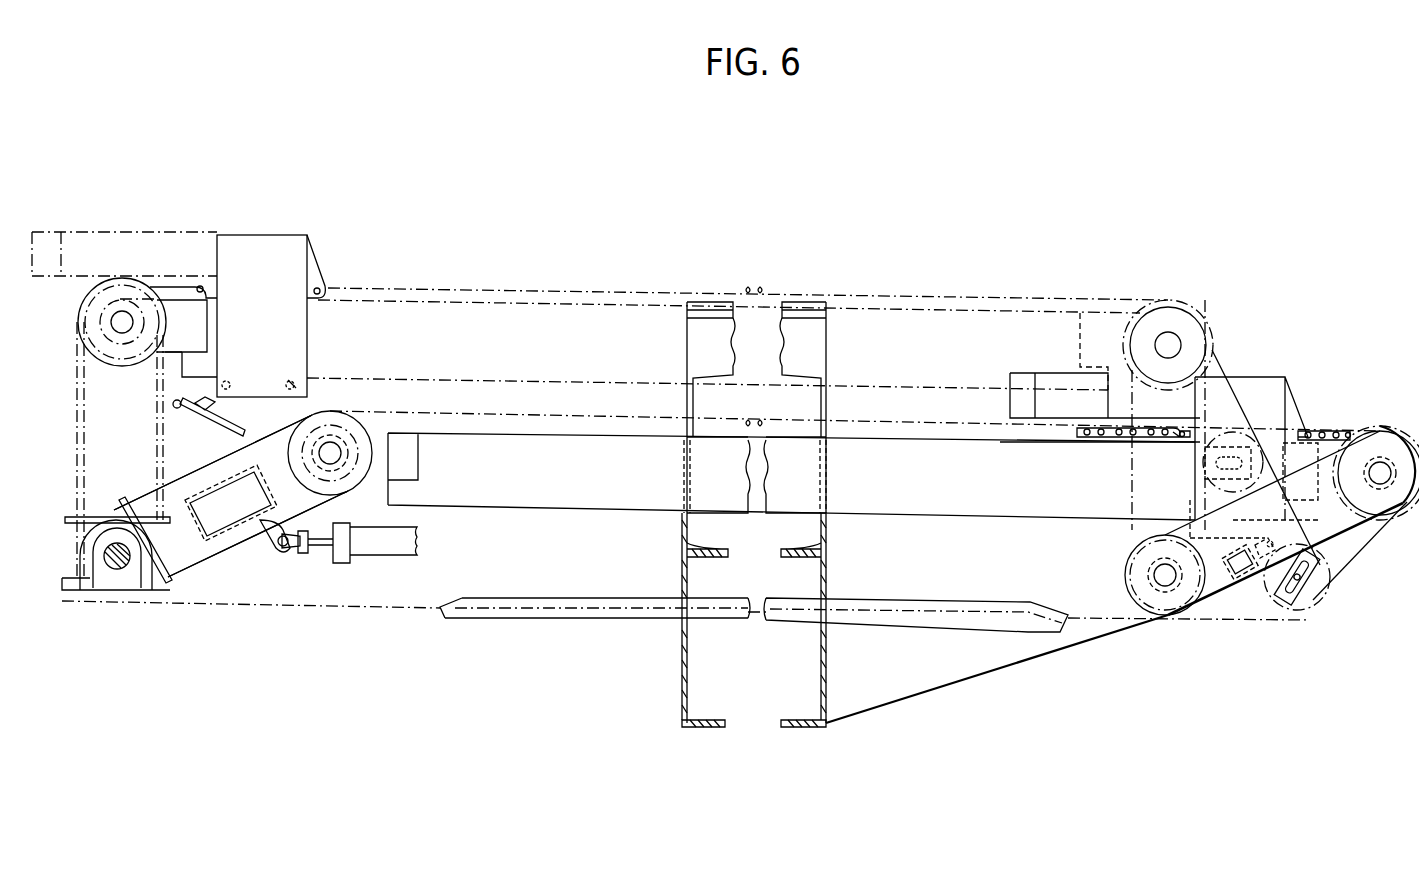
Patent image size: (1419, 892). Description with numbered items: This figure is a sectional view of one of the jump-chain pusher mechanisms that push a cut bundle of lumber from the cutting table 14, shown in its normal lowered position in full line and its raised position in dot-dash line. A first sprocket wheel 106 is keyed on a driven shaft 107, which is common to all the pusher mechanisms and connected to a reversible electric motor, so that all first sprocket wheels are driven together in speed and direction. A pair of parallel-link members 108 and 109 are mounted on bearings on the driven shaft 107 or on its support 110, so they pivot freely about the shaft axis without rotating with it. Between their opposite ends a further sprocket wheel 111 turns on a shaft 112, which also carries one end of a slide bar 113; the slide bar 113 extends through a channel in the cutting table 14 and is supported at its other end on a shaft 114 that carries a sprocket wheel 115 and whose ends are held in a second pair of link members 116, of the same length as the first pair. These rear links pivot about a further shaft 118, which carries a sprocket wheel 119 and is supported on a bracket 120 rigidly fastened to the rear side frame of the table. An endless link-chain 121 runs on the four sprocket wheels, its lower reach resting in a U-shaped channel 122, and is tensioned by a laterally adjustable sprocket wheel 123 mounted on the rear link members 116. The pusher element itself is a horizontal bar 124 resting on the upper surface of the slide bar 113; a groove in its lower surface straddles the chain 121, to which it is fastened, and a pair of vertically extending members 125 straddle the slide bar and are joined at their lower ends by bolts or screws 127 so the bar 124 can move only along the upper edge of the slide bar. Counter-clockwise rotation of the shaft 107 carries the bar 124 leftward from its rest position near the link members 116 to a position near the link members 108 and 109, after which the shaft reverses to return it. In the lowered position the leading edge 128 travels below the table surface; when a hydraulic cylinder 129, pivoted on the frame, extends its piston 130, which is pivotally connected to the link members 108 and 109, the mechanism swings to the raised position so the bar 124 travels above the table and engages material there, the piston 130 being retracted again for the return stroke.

The cutting table 14 is at (682, 676).
The first sprocket wheel 106 is at (76, 556).
The driven shaft 107 is at (118, 562).
The parallel-link member 108 is at (188, 561).
The parallel-link member 109 is at (231, 496).
The support 110 is at (80, 591).
The further sprocket wheel 111 is at (80, 308).
The shaft 112 is at (112, 331).
The slide bar 113 is at (512, 318).
The shaft 114 is at (1383, 480).
The sprocket wheel 115 is at (1381, 433).
The link member 116 is at (1345, 522).
The further shaft 118 is at (1155, 577).
The sprocket wheel 119 is at (1131, 608).
The bracket 120 is at (948, 668).
The endless link-chain 121 is at (76, 452).
The U-shaped channel 122 is at (571, 617).
The tensioning sprocket wheel 123 is at (1311, 605).
The horizontal bar 124 is at (268, 234).
The vertically extending member 125 is at (274, 326).
The bolt or screw 127 is at (296, 384).
The leading edge 128 is at (38, 232).
The hydraulic cylinder 129 is at (397, 546).
The piston 130 is at (236, 416).